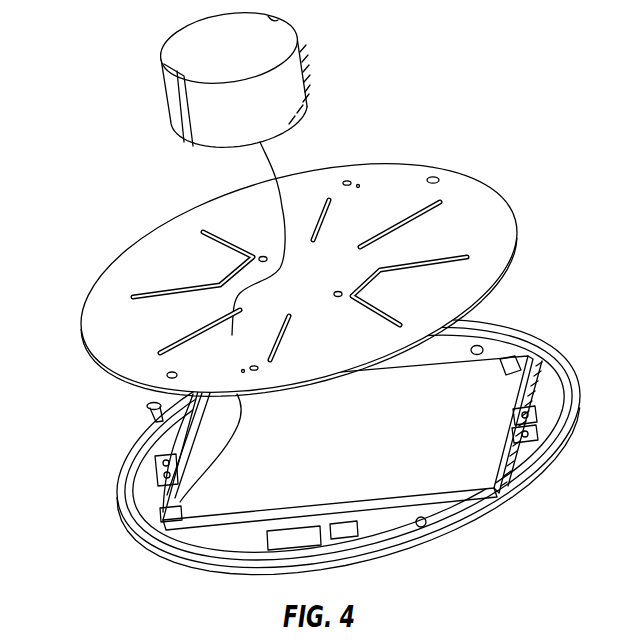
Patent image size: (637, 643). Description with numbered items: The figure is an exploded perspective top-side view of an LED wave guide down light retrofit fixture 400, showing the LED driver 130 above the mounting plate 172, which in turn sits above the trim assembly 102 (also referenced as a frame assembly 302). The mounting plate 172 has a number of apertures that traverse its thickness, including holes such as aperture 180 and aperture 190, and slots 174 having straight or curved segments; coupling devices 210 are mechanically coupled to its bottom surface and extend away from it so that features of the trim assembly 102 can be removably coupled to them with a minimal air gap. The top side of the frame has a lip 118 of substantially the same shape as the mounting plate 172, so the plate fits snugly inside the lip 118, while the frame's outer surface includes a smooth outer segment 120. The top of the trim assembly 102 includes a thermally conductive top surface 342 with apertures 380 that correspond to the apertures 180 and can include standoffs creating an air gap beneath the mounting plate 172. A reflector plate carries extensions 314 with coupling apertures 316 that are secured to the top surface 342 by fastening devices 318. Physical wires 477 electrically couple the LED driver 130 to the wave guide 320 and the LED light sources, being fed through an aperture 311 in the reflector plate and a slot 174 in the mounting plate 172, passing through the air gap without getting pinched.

The LED wave guide down light retrofit fixture 400 is at (108, 172).
The LED driver 130 is at (247, 61).
The mounting plate 172 is at (486, 245).
The slot 174 is at (205, 230).
The coupling device 210 is at (330, 197).
The aperture 190 is at (350, 180).
The aperture 180 is at (436, 177).
The physical wire 477 is at (258, 284).
The trim assembly 102 is at (110, 530).
The frame assembly 302 is at (530, 521).
The smooth outer segment 120 is at (484, 521).
The lip 118 is at (536, 470).
The wave guide 320 is at (390, 453).
The aperture 380 is at (480, 345).
The fastening device 318 is at (513, 358).
The aperture 316 is at (514, 414).
The extension 314 is at (539, 421).
The aperture 311 is at (165, 491).
The top surface 342 is at (375, 541).